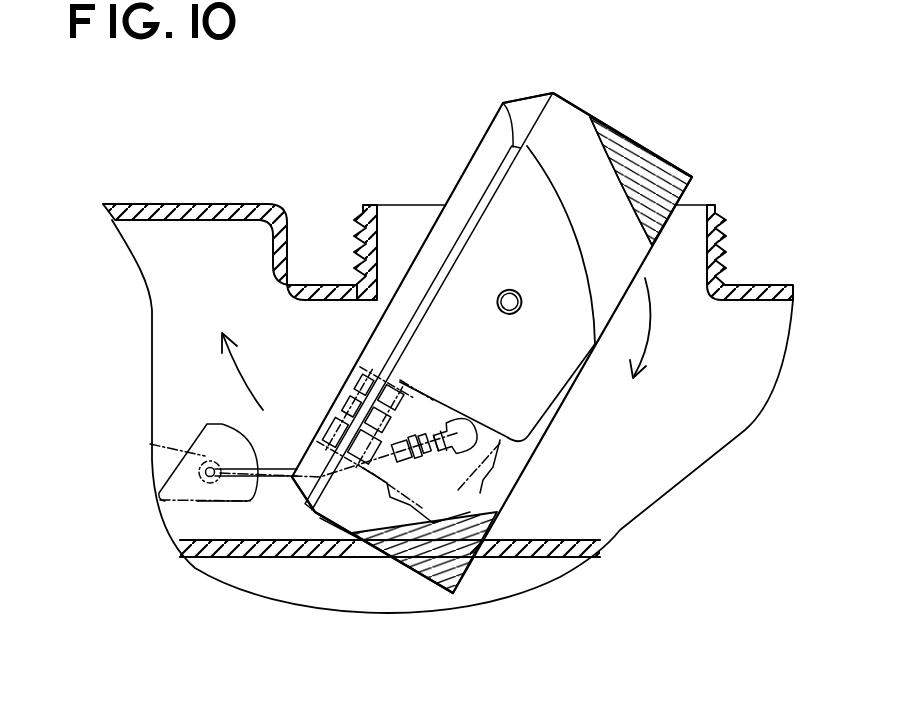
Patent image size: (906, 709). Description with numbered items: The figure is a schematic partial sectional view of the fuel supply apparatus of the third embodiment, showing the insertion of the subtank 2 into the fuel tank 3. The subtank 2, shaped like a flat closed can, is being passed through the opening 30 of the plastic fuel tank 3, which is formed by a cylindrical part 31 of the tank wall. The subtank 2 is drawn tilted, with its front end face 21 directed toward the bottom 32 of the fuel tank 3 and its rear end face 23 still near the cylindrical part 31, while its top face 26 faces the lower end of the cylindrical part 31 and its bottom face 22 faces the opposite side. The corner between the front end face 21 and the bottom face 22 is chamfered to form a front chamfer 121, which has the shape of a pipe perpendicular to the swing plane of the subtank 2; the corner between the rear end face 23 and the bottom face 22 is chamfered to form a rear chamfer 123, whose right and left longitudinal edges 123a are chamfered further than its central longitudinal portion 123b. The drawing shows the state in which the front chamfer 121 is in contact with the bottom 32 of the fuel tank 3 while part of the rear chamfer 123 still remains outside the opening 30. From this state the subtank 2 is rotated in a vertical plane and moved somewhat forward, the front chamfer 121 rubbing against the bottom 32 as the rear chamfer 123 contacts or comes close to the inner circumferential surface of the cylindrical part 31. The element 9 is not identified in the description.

The subtank 2 is at (537, 387).
The fuel tank 3 is at (185, 204).
The stopper 9 is at (152, 444).
The front end face 21 is at (363, 557).
The bottom face 22 is at (572, 390).
The rear end face 23 is at (575, 115).
The top face 26 is at (422, 243).
The opening 30 is at (706, 205).
The cylindrical part 31 is at (360, 225).
The bottom 32 is at (272, 554).
The front chamfer 121 is at (416, 535).
The rear chamfer 123 is at (630, 160).
The longitudinal edges 123a is at (598, 190).
The central longitudinal portion 123b is at (668, 198).